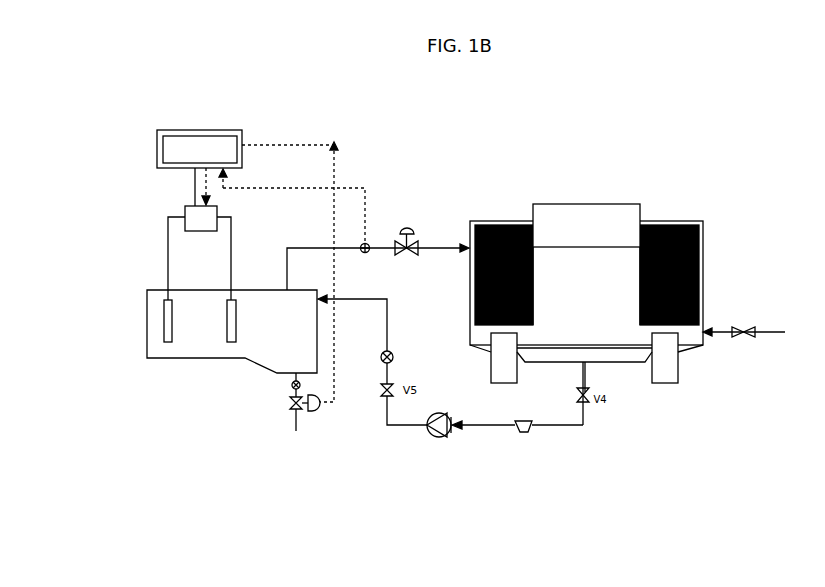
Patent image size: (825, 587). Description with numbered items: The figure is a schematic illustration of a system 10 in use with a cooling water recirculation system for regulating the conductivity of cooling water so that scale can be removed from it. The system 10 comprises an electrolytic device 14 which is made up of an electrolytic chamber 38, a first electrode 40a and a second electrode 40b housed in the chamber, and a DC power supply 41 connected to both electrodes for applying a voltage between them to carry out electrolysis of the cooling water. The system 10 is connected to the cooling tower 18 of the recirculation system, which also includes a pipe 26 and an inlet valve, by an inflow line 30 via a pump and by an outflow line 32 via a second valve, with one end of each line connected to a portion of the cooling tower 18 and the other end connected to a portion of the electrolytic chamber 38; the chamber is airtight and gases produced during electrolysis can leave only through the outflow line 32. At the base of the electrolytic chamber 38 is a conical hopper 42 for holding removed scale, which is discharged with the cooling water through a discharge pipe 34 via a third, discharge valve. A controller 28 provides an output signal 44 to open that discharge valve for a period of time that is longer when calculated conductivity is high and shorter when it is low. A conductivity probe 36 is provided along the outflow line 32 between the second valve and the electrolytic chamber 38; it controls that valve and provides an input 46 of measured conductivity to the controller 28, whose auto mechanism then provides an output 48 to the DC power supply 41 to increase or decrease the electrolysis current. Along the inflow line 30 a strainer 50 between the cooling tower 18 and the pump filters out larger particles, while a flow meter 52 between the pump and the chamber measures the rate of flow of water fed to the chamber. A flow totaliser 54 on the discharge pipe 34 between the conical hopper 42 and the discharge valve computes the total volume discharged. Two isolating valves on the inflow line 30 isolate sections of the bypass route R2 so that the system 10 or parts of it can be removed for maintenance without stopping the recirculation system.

The system 10 is at (156, 440).
The electrolytic device 14 is at (124, 287).
The cooling tower 18 is at (665, 221).
The pipe 26 is at (767, 333).
The controller 28 is at (208, 130).
The inflow line 30 is at (388, 322).
The outflow line 32 is at (287, 247).
The discharge pipe 34 is at (292, 425).
The conductivity probe 36 is at (369, 244).
The electrolytic chamber 38 is at (208, 359).
The first electrode 40a is at (166, 322).
The second electrode 40b is at (230, 318).
The DC power supply 41 is at (185, 210).
The conical hopper 42 is at (298, 371).
The output signal 44 is at (282, 145).
The input 46 is at (347, 187).
The output 48 is at (194, 180).
The strainer 50 is at (525, 434).
The flow meter 52 is at (382, 362).
The flow totaliser 54 is at (292, 383).
The bypass route R2 is at (413, 428).